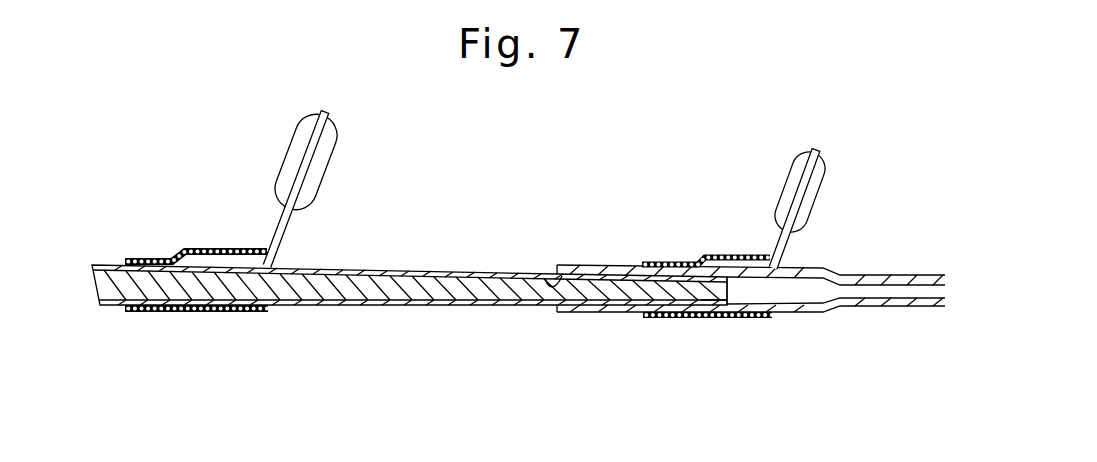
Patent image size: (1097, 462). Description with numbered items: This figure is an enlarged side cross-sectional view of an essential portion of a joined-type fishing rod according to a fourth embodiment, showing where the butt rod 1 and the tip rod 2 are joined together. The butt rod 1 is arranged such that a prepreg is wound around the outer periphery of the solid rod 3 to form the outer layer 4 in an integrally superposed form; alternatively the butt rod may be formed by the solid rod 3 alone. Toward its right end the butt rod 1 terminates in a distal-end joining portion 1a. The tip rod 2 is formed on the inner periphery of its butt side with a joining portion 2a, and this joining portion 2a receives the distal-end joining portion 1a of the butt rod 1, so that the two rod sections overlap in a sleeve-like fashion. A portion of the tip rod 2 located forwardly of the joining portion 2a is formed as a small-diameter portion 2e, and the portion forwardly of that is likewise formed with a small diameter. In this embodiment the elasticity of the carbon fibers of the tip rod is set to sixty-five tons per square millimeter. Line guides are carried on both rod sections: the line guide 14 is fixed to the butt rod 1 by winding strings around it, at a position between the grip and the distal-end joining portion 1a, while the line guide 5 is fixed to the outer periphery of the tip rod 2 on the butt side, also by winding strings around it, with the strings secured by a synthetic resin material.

The butt rod 1 is at (409, 291).
The distal-end joining portion 1a is at (723, 302).
The tip rod 2 is at (737, 291).
The joining portion 2a is at (545, 277).
The small-diameter portion 2e is at (870, 306).
The solid rod 3 is at (488, 282).
The outer layer 4 is at (432, 270).
The line guide 5 is at (798, 152).
The line guide 14 is at (300, 118).